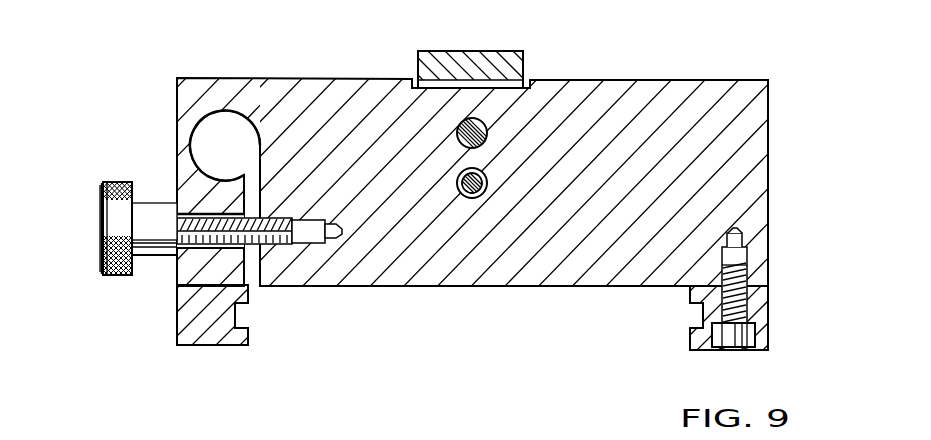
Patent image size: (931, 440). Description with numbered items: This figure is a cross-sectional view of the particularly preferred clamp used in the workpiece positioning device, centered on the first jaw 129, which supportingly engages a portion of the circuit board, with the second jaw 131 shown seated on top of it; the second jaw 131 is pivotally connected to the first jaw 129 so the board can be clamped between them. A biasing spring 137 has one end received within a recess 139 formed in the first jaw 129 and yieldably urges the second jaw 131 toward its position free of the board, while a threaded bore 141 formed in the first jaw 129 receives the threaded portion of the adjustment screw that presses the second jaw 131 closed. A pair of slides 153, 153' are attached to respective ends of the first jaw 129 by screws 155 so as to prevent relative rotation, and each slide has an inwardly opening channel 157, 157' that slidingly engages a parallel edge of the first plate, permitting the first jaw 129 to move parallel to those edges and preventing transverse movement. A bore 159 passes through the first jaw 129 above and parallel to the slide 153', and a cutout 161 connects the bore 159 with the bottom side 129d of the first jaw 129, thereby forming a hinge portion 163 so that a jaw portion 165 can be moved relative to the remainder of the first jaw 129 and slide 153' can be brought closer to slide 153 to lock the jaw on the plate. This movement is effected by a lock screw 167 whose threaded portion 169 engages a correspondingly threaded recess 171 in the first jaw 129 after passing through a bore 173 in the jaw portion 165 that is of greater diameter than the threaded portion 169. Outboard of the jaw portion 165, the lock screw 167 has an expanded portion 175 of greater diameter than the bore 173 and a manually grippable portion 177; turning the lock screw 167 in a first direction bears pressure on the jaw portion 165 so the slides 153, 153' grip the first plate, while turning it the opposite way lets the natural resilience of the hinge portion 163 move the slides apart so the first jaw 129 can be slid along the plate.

The first jaw 129 is at (768, 180).
The bottom side of the first jaw 129d is at (385, 288).
The second jaw 131 is at (505, 51).
The biasing spring 137 is at (487, 183).
The recess 139 is at (478, 198).
The threaded bore 141 is at (487, 136).
The slide 153 is at (729, 291).
The slide 153' is at (210, 331).
The screws 155 is at (740, 350).
The channel 157 is at (660, 321).
The channel 157' is at (273, 334).
The bore 159 is at (226, 110).
The cutout 161 is at (260, 203).
The hinge portion 163 is at (177, 137).
The jaw portion 165 is at (176, 275).
The lock screw 167 is at (100, 221).
The threaded portion 169 is at (270, 246).
The threaded recess 171 is at (317, 245).
The bore 173 is at (193, 213).
The expanded portion 175 is at (152, 203).
The manually grippable portion 177 is at (118, 276).